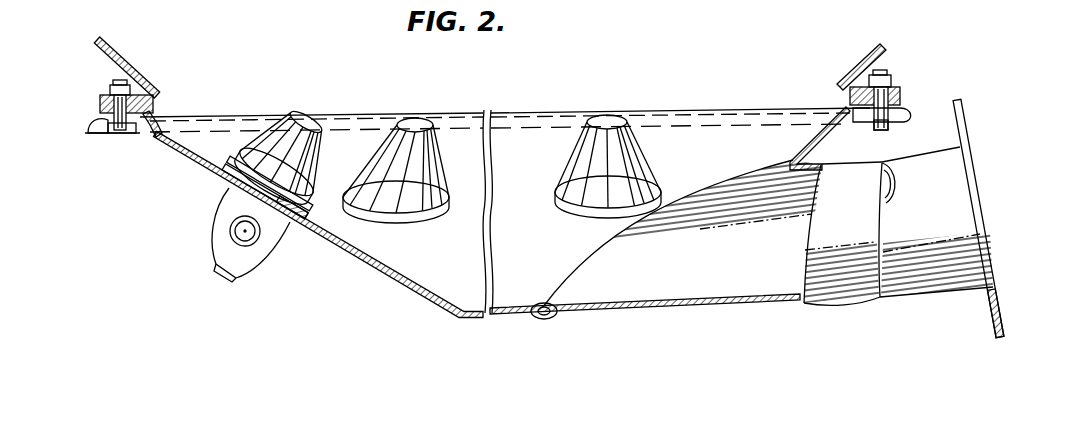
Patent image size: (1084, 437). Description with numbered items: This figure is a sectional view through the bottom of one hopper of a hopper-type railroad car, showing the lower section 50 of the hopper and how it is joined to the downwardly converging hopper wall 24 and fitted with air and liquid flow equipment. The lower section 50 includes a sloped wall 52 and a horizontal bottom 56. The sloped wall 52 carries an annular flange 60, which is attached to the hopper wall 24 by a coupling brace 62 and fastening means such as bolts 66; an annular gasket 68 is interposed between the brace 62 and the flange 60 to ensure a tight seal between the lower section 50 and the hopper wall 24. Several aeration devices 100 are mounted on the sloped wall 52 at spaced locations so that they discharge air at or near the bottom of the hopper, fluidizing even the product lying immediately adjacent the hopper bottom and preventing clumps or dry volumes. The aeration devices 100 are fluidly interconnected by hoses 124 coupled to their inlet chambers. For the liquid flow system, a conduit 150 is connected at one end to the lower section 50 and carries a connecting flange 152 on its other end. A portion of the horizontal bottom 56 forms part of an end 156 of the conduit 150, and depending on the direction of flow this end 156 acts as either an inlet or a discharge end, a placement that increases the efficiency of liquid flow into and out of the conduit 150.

The hopper wall 24 is at (120, 53).
The lower section 50 is at (178, 191).
The sloped wall 52 is at (323, 240).
The horizontal bottom 56 is at (512, 318).
The annular flange 60 is at (146, 130).
The coupling brace 62 is at (141, 93).
The bolts 66 is at (117, 128).
The annular gasket 68 is at (150, 111).
The aeration device 100 is at (403, 107).
The hoses 124 is at (248, 246).
The conduit 150 is at (855, 303).
The connecting flange 152 is at (955, 112).
The end of the conduit 156 is at (719, 180).